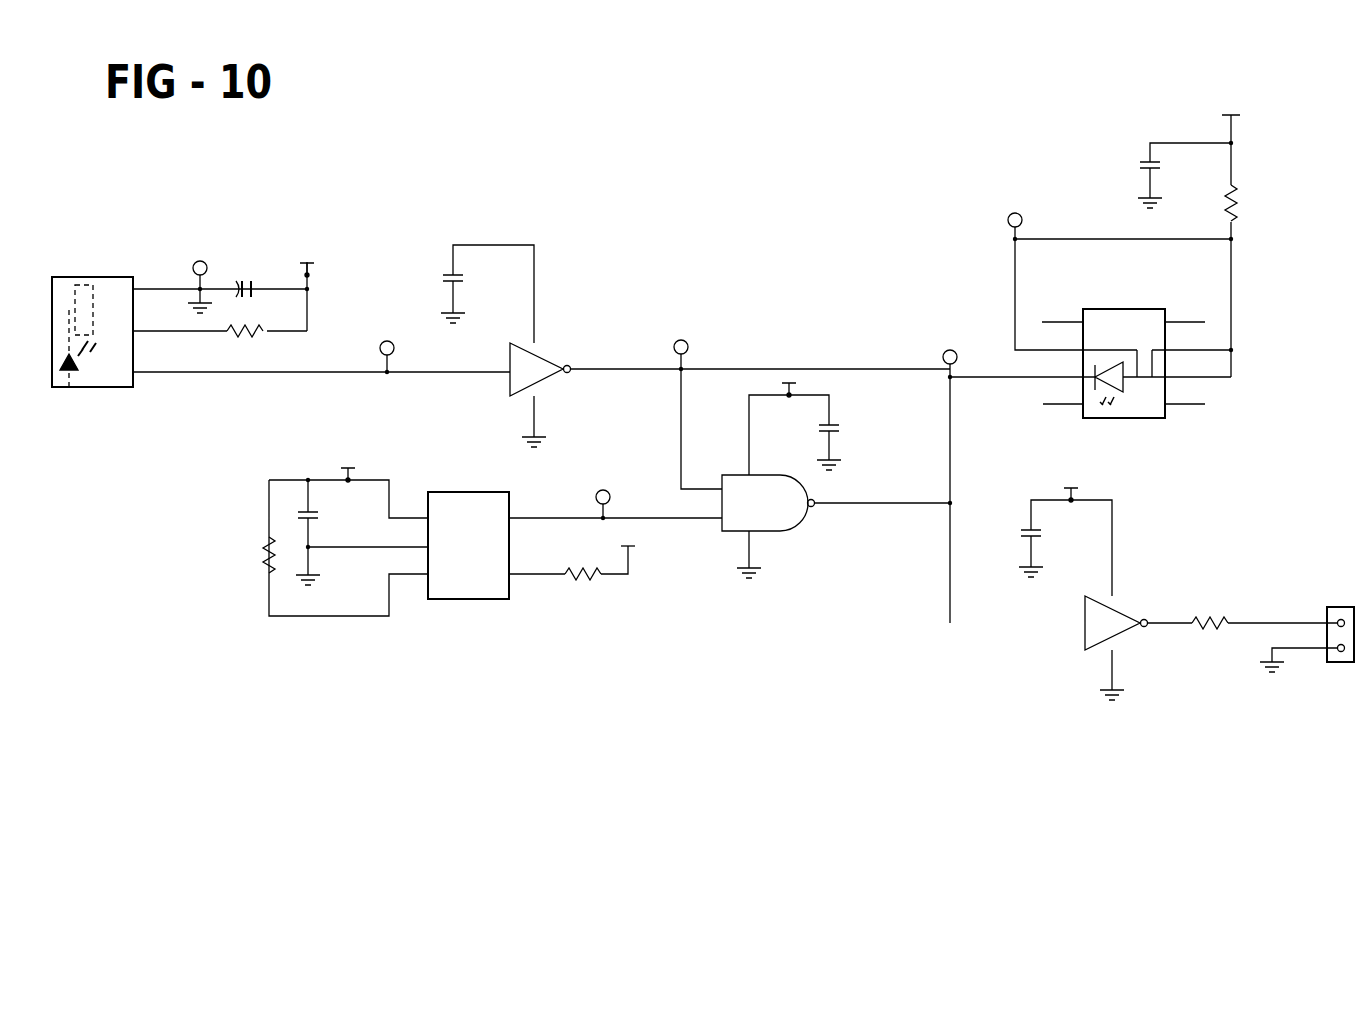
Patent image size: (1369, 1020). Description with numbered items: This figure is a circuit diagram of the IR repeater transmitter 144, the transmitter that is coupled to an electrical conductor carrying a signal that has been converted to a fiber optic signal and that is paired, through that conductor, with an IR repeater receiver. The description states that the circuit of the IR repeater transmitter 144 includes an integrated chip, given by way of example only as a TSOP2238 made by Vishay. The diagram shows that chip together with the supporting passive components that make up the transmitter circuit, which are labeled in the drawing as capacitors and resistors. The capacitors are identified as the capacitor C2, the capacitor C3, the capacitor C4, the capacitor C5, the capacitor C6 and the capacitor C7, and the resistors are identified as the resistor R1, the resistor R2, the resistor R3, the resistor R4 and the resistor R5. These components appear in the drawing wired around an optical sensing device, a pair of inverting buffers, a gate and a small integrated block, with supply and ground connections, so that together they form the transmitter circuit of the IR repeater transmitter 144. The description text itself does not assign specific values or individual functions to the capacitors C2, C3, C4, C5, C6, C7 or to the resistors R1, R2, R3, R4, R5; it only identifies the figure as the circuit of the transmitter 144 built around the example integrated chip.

The IR repeater transmitter 144 is at (78, 407).
The capacitor C2 is at (1161, 165).
The capacitor C3 is at (246, 278).
The capacitor C4 is at (464, 281).
The capacitor C5 is at (841, 429).
The capacitor C6 is at (318, 515).
The capacitor C7 is at (1043, 533).
The resistor R1 is at (1240, 203).
The resistor R2 is at (245, 340).
The resistor R3 is at (259, 555).
The resistor R4 is at (583, 565).
The resistor R5 is at (1210, 614).